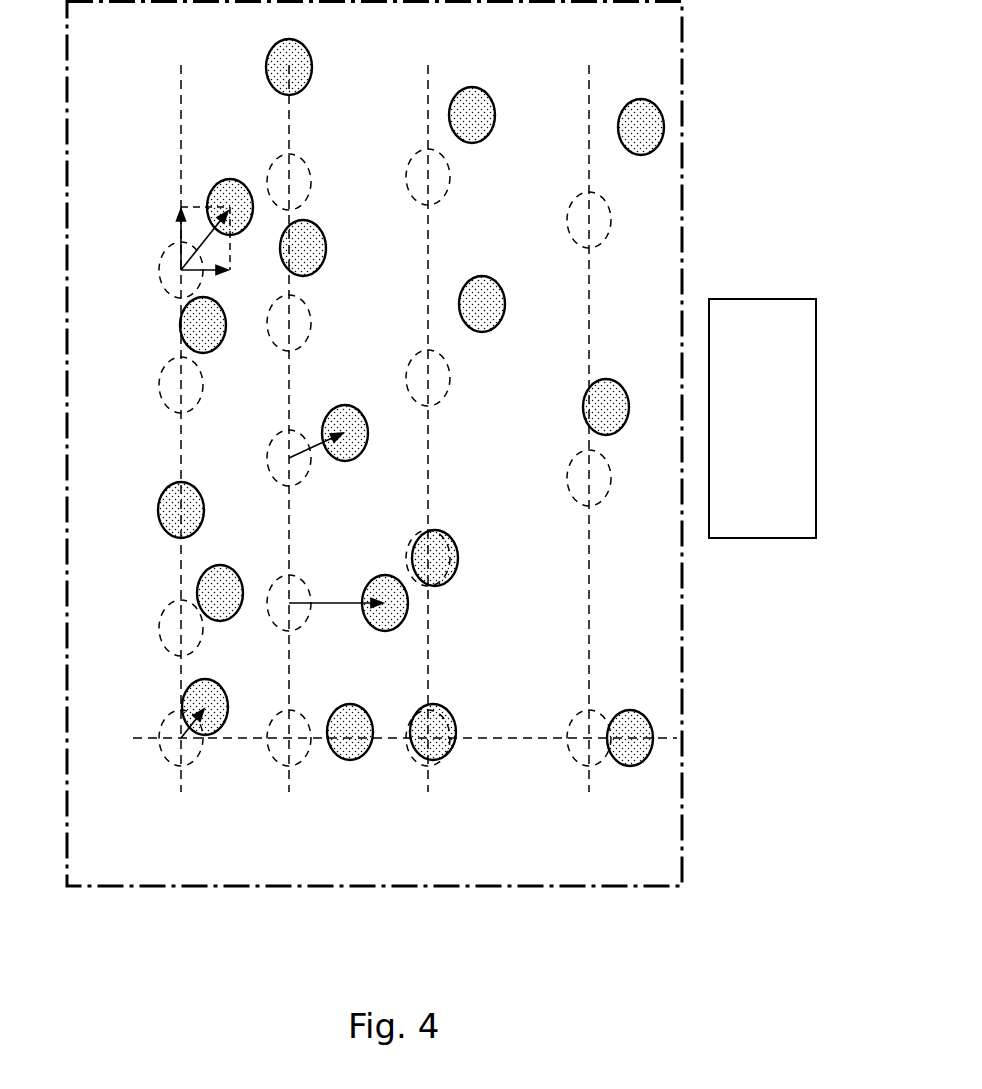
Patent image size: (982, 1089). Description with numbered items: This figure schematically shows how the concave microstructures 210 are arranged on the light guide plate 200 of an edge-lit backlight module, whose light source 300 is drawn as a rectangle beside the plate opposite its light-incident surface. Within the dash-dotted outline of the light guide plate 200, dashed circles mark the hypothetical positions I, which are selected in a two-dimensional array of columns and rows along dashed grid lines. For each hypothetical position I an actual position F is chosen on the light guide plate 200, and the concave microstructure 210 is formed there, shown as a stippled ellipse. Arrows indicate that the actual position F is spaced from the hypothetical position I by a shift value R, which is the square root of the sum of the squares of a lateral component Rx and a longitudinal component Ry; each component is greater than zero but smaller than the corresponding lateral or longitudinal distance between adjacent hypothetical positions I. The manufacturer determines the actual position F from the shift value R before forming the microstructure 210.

The light guide plate 200 is at (670, 793).
The concave microstructures 210 is at (274, 816).
The light source 300 is at (757, 317).
The shift value R is at (132, 702).
The lateral shift component Rx is at (217, 253).
The longitudinal shift component Ry is at (186, 238).
The hypothetical position I is at (162, 763).
The actual position F is at (213, 740).